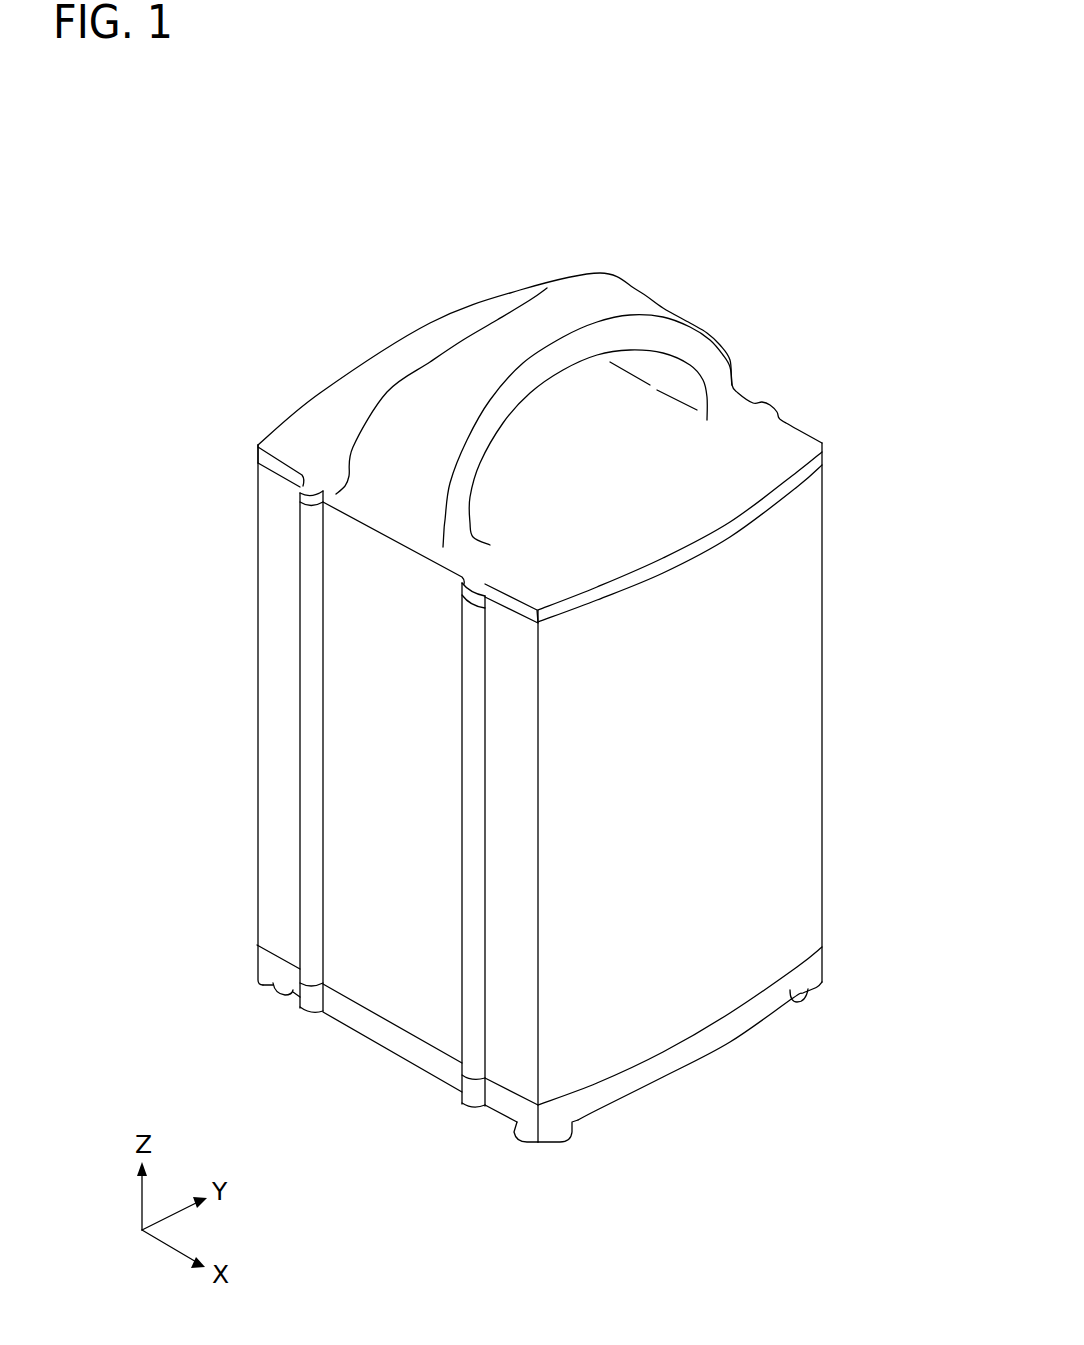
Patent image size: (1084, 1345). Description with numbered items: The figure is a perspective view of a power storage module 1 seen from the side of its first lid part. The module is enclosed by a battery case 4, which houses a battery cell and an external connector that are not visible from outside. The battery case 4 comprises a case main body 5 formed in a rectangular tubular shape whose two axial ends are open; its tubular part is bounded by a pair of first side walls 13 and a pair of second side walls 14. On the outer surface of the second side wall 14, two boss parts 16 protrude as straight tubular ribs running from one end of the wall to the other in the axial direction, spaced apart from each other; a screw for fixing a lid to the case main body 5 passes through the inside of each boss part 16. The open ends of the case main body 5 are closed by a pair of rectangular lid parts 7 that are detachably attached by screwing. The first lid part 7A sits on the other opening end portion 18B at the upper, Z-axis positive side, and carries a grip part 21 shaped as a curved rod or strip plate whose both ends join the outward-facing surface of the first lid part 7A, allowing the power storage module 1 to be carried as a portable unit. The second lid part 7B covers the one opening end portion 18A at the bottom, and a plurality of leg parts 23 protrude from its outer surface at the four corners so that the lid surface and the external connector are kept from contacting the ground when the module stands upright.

The power storage module 1 is at (237, 180).
The battery case 4 is at (272, 400).
The case main body 5 is at (835, 718).
The lid part 7 is at (562, 720).
The first lid part 7A is at (797, 420).
The second lid part 7B is at (732, 1048).
The first side wall 13 is at (788, 634).
The second side wall 14 is at (380, 735).
The boss part 16 is at (300, 606).
The one opening end portion 18A is at (822, 932).
The other opening end portion 18B is at (823, 470).
The grip part 21 is at (571, 297).
The leg part 23 is at (272, 987).